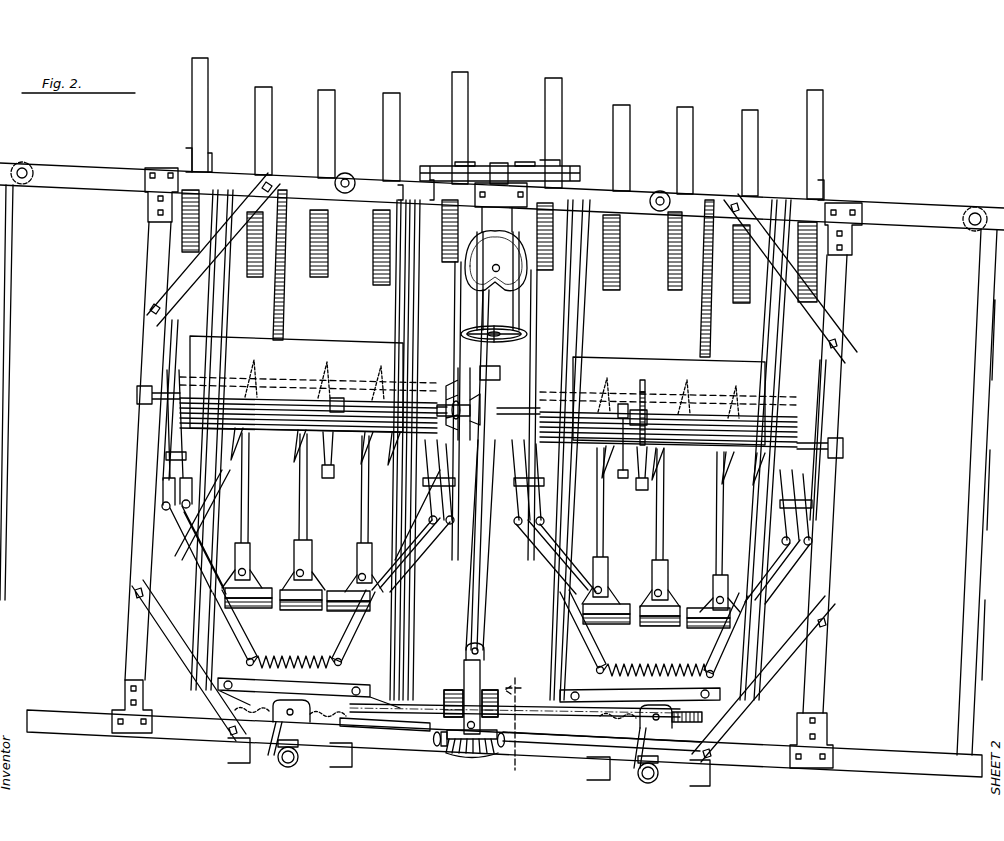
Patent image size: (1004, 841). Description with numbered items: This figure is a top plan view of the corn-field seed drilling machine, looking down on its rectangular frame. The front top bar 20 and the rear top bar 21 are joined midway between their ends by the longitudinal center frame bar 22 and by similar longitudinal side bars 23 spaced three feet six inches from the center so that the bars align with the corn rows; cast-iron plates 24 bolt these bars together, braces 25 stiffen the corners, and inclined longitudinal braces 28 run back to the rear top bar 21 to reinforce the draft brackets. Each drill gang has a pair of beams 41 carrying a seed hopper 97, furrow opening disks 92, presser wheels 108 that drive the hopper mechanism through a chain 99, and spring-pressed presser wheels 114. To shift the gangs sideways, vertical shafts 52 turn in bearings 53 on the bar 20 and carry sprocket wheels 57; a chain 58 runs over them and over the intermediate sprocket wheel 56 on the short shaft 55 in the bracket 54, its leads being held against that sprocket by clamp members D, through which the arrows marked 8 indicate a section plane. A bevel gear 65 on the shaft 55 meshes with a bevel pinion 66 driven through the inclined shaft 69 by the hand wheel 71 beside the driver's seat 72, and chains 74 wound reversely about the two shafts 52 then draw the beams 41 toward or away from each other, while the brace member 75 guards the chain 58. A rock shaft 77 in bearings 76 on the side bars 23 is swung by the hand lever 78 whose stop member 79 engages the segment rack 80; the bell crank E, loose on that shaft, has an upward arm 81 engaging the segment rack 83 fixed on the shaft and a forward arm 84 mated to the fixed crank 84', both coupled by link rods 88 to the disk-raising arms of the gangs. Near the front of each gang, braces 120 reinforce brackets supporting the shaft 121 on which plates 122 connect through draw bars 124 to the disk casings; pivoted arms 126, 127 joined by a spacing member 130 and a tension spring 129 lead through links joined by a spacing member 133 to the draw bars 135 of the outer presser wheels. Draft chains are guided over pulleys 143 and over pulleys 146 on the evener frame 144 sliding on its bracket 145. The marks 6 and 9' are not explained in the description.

The front top bar 20 is at (858, 756).
The rear top bar 21 is at (883, 210).
The longitudinal frame bar 22 is at (488, 580).
The longitudinal side bars 23 is at (140, 477).
The connecting plates 24 is at (147, 208).
The braces 25 is at (168, 284).
The inclined longitudinal braces 28 is at (975, 488).
The beams 41 is at (225, 525).
The vertical shaft 52 is at (292, 707).
The bearings 53 is at (272, 740).
The bracket 54 is at (464, 683).
The short vertical shaft 55 is at (462, 746).
The sprocket wheel 56 is at (434, 742).
The sprocket wheels 57 is at (469, 686).
The chain 58 is at (524, 712).
The bearing 6 is at (466, 650).
The bevel gear 65 is at (476, 758).
The bevel pinion 66 is at (488, 690).
The inclined shaft 69 is at (473, 546).
The hand wheel 71 is at (522, 330).
The seat 72 is at (496, 261).
The chain 74 is at (225, 740).
The brace member 75 is at (383, 728).
The bearings 76 is at (138, 390).
The rock shaft 77 is at (621, 403).
The hand lever 78 is at (466, 440).
The stop member 79 is at (448, 365).
The segment rack 80 is at (497, 370).
The upwardly extending arm 81 is at (636, 436).
The segment rack 83 is at (647, 396).
The forwardly extending arm 84 is at (666, 472).
The crank 84' is at (334, 466).
The link rods 88 is at (632, 492).
The furrow opening disks 92 is at (240, 446).
The seed box 97 is at (308, 384).
The chain 99 is at (286, 302).
The plate 9' is at (658, 376).
The presser wheels 108 is at (328, 271).
The presser wheel 114 is at (208, 72).
The braces 120 is at (590, 645).
The shaft 121 is at (305, 604).
The plates 122 is at (290, 585).
The draw bars 124 is at (346, 532).
The inner arms 126 is at (236, 628).
The outer arms 127 is at (182, 556).
The tension spring 129 is at (285, 658).
The spacing member 130 is at (170, 507).
The spacing member 133 is at (172, 485).
The draw bars 135 is at (172, 327).
The pulleys 143 is at (28, 164).
The evener frame 144 is at (545, 177).
The bracket 145 is at (495, 178).
The pulleys 146 is at (462, 164).
The clamp members D is at (444, 700).
The bell crank E is at (345, 400).
The section line 8 is at (510, 783).